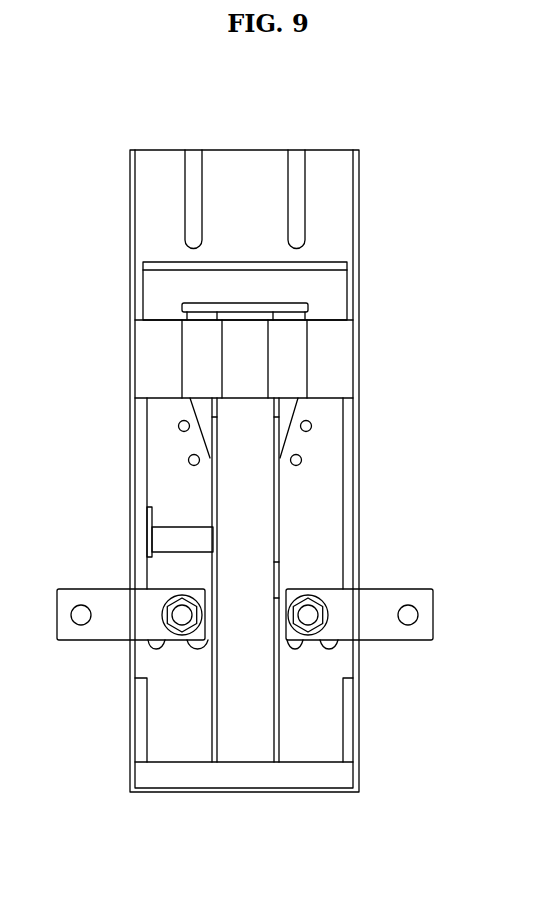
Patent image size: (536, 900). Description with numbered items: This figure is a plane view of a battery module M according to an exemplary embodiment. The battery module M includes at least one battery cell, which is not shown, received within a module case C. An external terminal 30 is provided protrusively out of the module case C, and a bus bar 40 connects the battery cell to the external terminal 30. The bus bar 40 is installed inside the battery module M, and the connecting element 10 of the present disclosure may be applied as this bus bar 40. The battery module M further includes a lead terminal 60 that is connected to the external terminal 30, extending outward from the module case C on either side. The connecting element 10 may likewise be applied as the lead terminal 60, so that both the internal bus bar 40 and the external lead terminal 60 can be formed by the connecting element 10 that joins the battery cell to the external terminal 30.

The battery module M is at (254, 120).
The module case C is at (359, 228).
The bus bar 40 is at (322, 478).
The lead terminal 60 is at (82, 641).
The connecting element 10 is at (359, 619).
The external terminal 30 is at (306, 622).